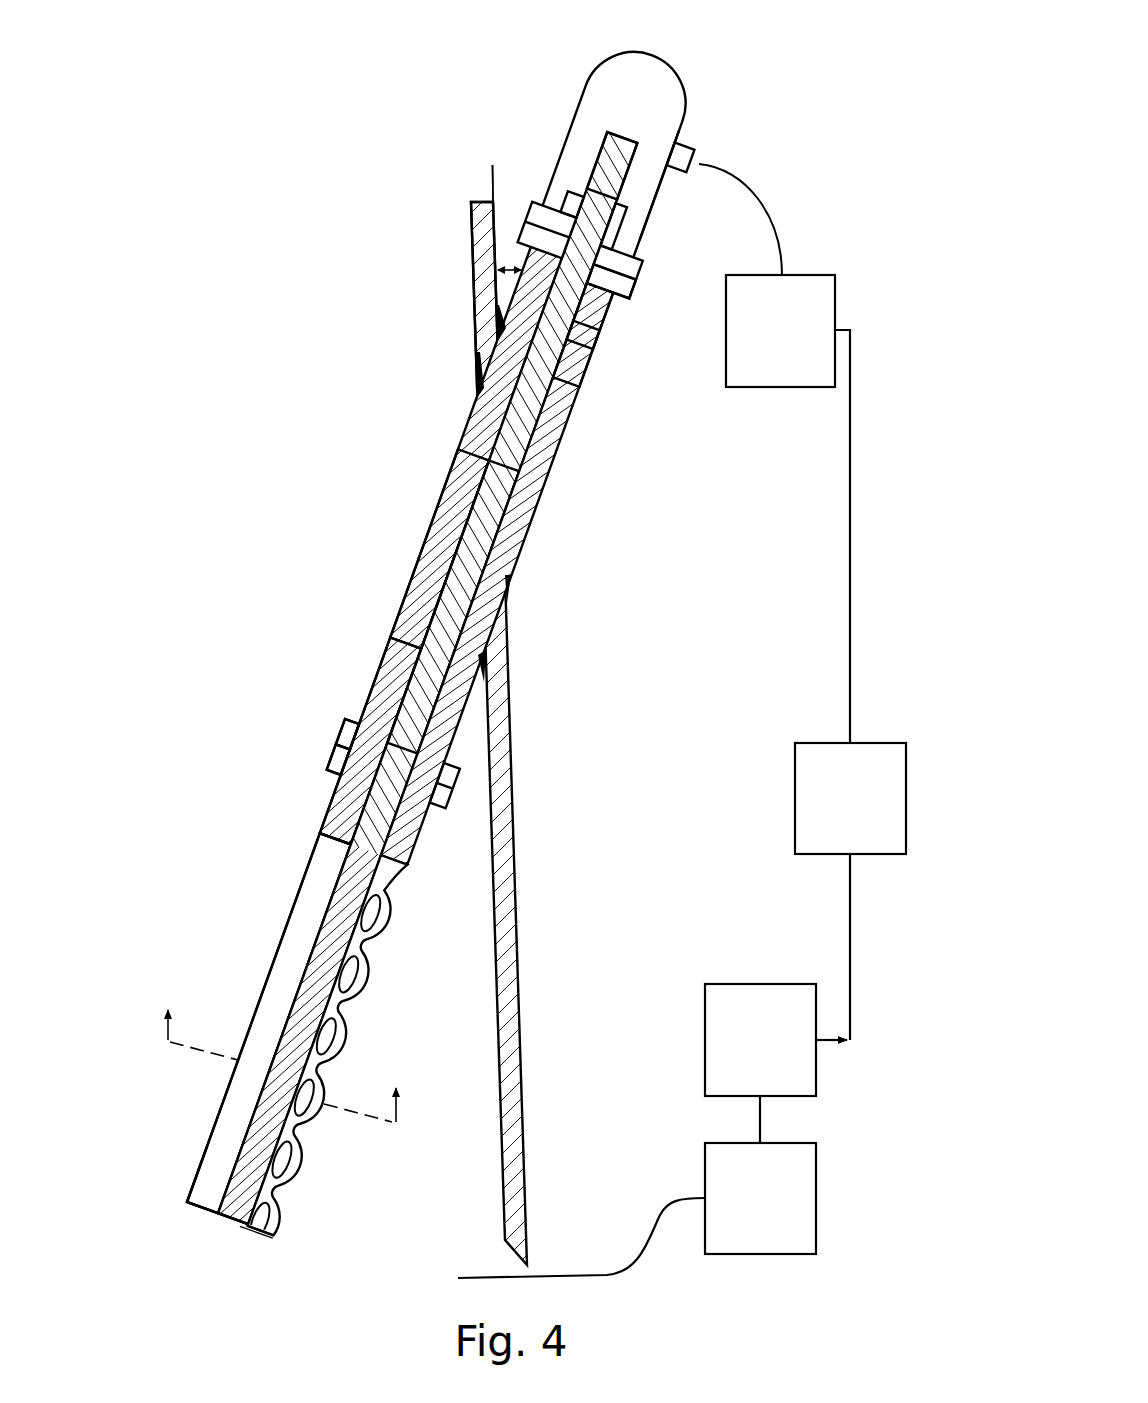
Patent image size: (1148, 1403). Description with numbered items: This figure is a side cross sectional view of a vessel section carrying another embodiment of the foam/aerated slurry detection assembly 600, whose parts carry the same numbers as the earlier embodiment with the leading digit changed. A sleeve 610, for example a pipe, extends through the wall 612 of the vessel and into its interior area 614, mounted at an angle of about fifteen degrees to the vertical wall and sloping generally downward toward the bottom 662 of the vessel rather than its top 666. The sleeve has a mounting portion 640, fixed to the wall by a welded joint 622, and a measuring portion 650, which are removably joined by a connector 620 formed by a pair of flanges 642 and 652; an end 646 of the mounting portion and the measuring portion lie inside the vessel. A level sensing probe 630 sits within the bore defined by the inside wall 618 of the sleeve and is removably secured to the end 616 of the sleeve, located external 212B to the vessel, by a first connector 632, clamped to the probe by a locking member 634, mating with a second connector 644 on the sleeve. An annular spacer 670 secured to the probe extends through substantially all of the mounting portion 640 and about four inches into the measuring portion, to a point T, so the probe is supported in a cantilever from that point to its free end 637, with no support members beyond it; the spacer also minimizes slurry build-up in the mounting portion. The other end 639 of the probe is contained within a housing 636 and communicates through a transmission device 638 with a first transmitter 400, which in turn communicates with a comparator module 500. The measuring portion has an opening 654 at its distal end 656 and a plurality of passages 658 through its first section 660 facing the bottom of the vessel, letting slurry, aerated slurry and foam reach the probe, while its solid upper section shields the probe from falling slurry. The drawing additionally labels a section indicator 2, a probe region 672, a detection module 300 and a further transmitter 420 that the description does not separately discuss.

The foam/aerated slurry detection assembly 600 is at (215, 408).
The sleeve 610 is at (380, 614).
The wall 612 is at (470, 228).
The interior area 614 is at (482, 897).
The end of the sleeve 616 is at (625, 304).
The inside wall 618 is at (532, 510).
The connector 620 is at (314, 740).
The welded joint 622 is at (496, 328).
The level sensing probe 630 is at (515, 565).
The first connector 632 is at (649, 262).
The locking member 634 is at (574, 200).
The housing 636 is at (690, 86).
The free end 637 is at (232, 1222).
The transmission device 638 is at (782, 190).
The another end of the level sensing probe 639 is at (622, 138).
The mounting portion 640 is at (436, 500).
The flange 642 is at (330, 722).
The second connector 644 is at (647, 262).
The end of the mounting portion 646 is at (335, 712).
The measuring portion 650 is at (298, 890).
The flange 652 is at (318, 758).
The opening 654 is at (176, 1213).
The distal end 656 is at (206, 1214).
The passages 658 is at (372, 918).
The first section 660 is at (270, 1238).
The bottom of the vessel 662 is at (422, 1276).
The top of the vessel 666 is at (380, 183).
The annular spacer 670 is at (424, 578).
The rod wall 672 is at (463, 547).
The exterior of the vessel 212B is at (832, 70).
The detection unit 300 is at (792, 1178).
The first transmitter 400 is at (776, 388).
The transmitter 420 is at (762, 998).
The comparator module 500 is at (796, 797).
The section line 2 is at (280, 1058).